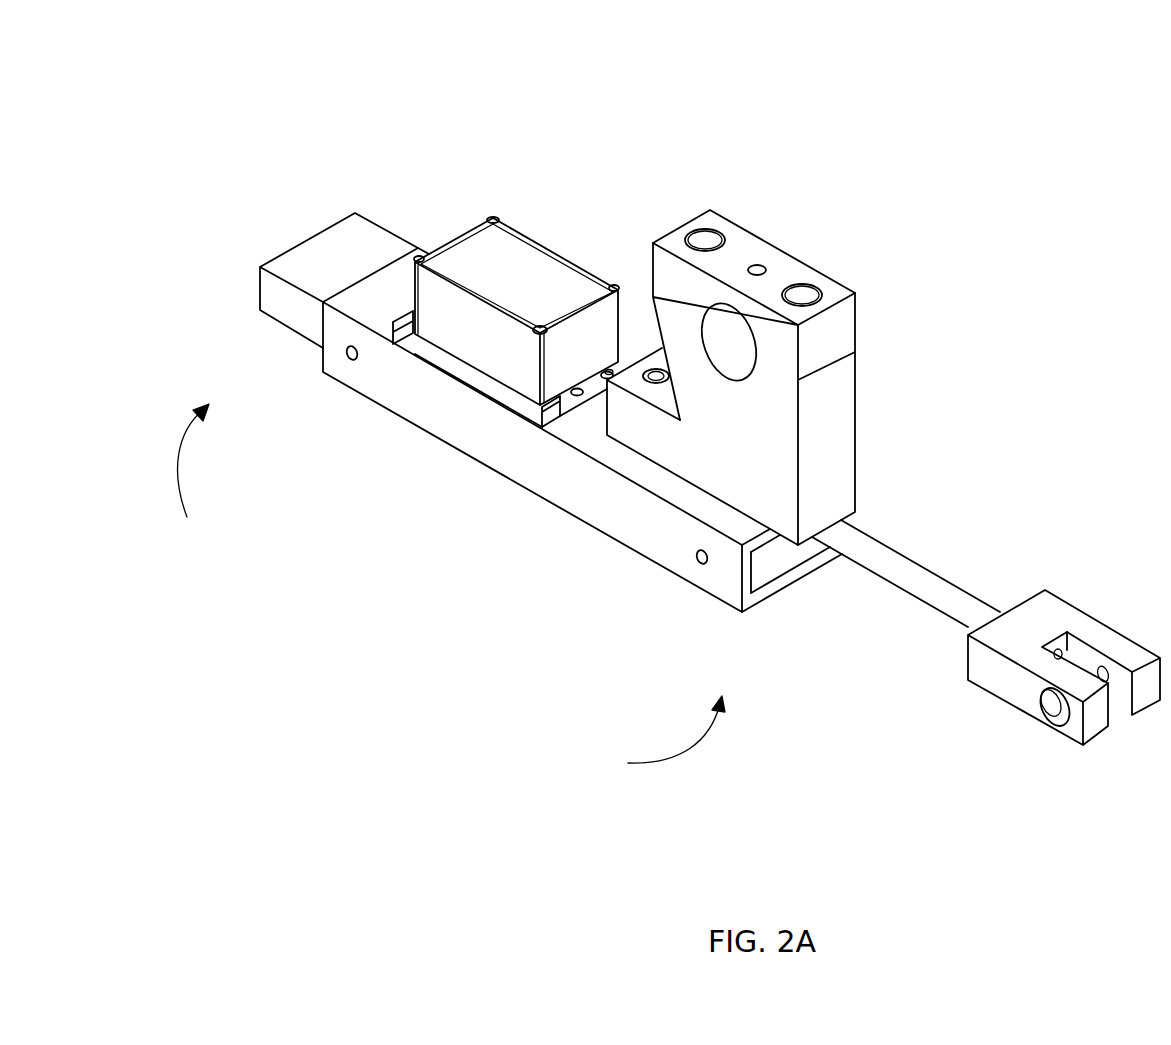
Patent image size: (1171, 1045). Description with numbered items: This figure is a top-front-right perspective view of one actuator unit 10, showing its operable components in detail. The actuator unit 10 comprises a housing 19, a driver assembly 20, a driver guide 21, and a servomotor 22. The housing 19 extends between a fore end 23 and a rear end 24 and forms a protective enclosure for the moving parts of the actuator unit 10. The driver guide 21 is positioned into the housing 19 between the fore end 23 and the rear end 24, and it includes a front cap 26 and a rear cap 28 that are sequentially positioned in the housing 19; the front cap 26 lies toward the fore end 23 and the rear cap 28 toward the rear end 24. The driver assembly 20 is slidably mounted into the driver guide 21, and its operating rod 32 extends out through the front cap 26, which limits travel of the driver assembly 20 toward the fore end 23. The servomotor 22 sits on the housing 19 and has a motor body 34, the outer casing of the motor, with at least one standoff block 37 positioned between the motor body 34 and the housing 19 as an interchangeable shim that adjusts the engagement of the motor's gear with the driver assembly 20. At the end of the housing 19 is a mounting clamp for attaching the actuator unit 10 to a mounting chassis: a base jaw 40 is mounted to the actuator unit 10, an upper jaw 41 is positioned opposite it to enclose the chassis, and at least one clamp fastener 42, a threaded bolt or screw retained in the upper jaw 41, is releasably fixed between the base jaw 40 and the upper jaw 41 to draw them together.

The actuator unit 10 is at (620, 186).
The housing 19 is at (613, 497).
The driver assembly 20 is at (986, 620).
The driver guide 21 is at (527, 425).
The servomotor 22 is at (525, 224).
The fore end 23 is at (662, 737).
The rear end 24 is at (193, 473).
The front cap 26 is at (773, 570).
The rear cap 28 is at (312, 263).
The operating rod 32 is at (888, 565).
The motor body 34 is at (472, 240).
The standoff block 37 is at (383, 345).
The base jaw 40 is at (842, 387).
The upper jaw 41 is at (847, 312).
The clamp fastener 42 is at (703, 236).